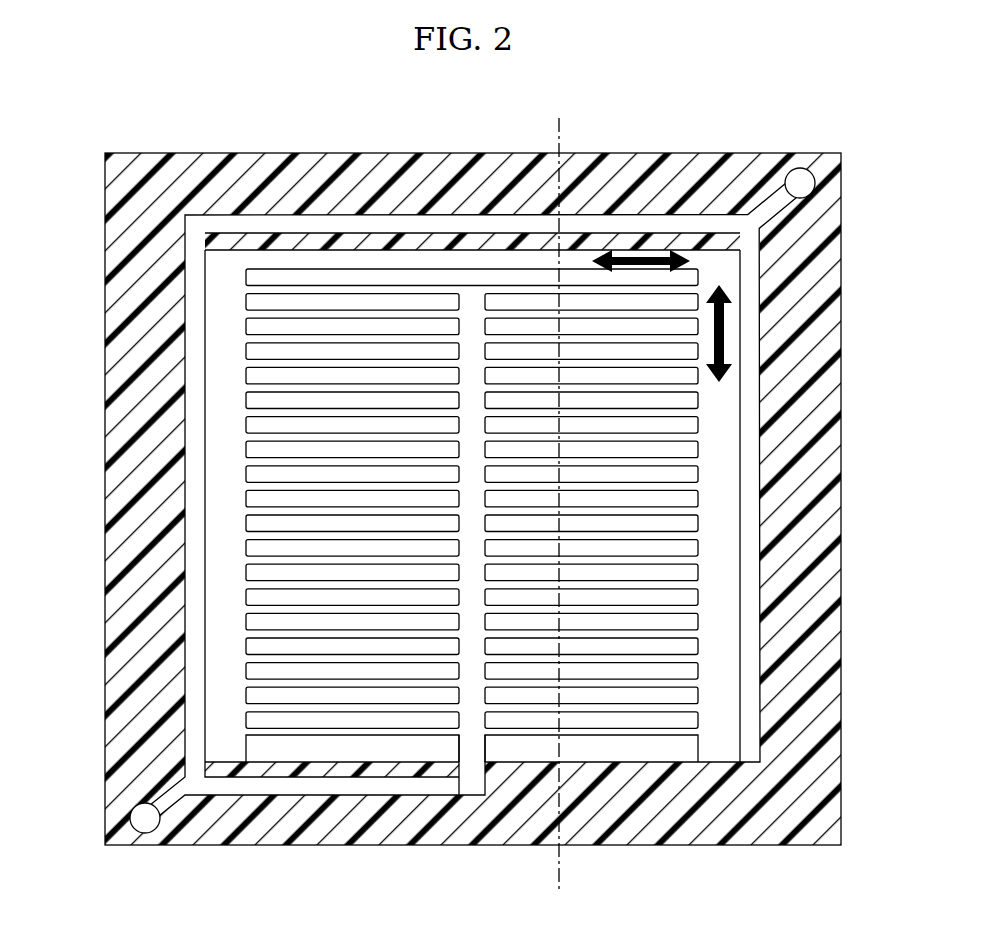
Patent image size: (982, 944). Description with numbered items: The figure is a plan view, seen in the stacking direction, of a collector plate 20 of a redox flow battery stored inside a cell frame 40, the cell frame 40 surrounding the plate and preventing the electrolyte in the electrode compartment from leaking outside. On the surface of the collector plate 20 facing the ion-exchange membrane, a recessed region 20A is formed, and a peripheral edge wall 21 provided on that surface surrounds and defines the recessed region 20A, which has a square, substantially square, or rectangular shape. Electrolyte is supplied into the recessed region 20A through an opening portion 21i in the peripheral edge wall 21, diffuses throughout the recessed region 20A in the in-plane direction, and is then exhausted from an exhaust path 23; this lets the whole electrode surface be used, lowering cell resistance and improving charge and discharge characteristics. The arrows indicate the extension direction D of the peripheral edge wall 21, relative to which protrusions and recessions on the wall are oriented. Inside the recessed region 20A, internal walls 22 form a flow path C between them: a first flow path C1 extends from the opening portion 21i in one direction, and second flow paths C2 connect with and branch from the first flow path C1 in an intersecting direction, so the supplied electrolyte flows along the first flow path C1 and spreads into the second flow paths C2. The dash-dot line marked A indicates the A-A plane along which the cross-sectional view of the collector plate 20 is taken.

The collector plate 20 is at (462, 497).
The recessed region 20A is at (248, 400).
The peripheral edge wall 21 is at (338, 260).
The opening portion 21i is at (472, 752).
The internal walls 22 is at (351, 427).
The exhaust path 23 is at (750, 385).
The cell frame 40 is at (125, 318).
The flow path C is at (351, 515).
The first flow path C1 is at (470, 694).
The second flow paths C2 is at (336, 655).
The extension direction D is at (662, 252).
The A-A plane A is at (559, 504).